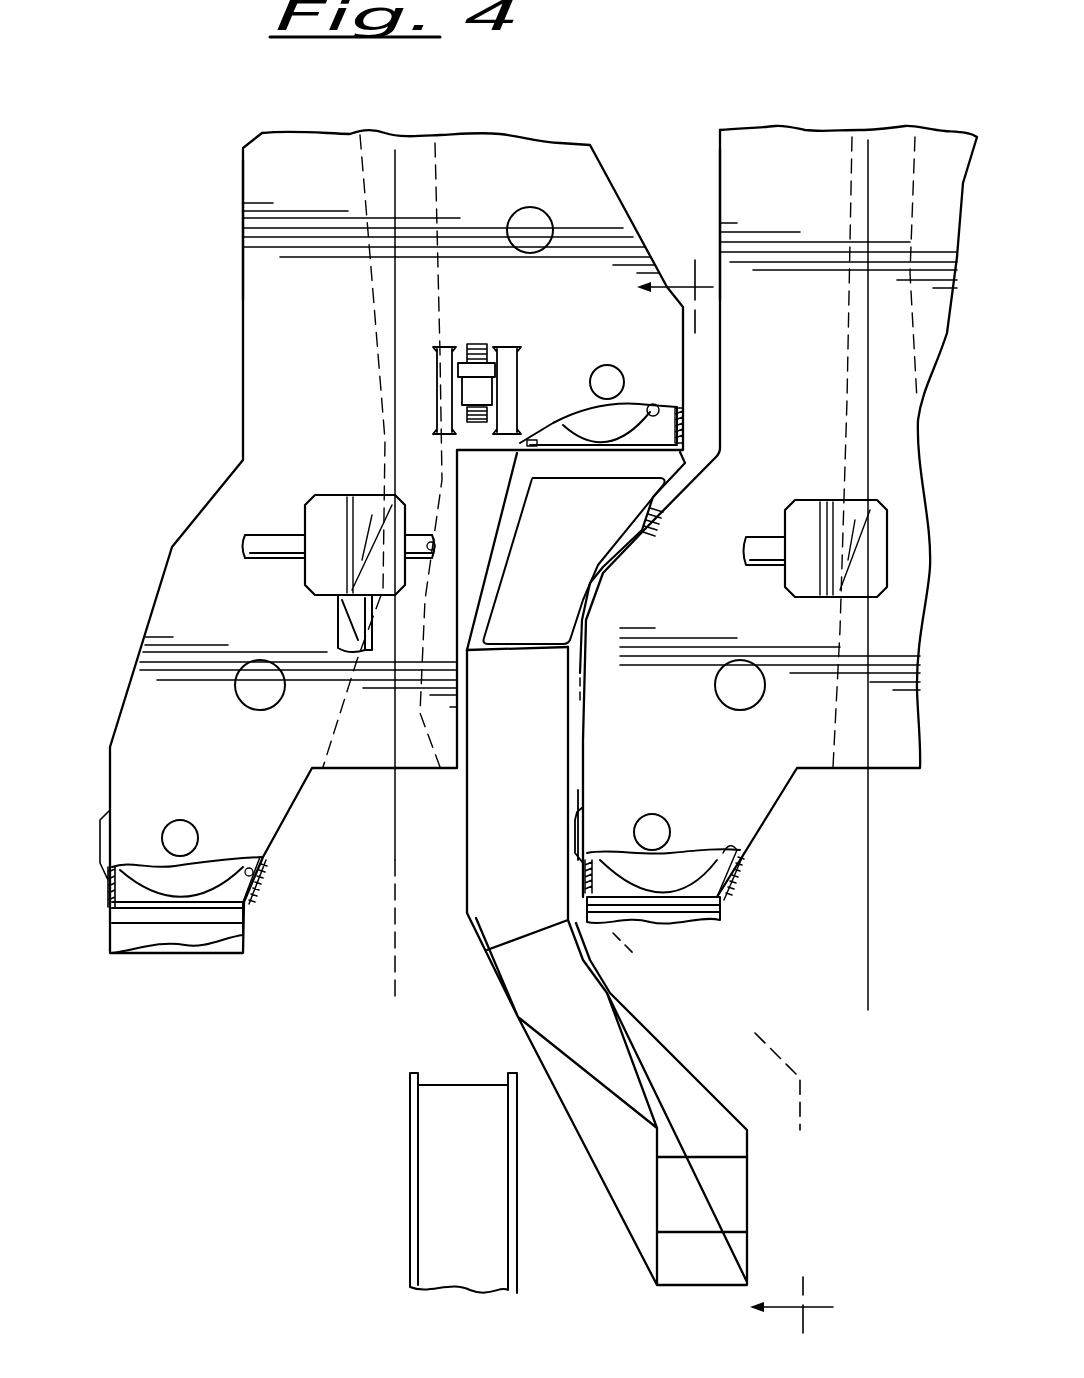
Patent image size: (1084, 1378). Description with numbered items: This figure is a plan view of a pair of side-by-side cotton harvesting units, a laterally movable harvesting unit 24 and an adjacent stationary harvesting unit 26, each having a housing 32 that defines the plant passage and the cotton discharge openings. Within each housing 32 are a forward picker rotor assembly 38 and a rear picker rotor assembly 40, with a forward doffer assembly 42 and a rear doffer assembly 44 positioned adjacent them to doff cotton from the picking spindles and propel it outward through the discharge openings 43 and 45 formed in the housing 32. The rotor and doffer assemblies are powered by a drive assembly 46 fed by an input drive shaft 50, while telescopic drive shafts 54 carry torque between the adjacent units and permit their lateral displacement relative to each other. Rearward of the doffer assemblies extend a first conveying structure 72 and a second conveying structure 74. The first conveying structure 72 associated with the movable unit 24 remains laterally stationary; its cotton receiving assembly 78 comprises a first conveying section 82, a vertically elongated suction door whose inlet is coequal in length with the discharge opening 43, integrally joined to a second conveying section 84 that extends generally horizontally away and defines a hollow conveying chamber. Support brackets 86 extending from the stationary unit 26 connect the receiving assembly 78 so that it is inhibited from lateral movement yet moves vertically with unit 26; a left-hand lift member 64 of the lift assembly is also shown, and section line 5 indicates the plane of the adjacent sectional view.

The section line 5- 5 is at (735, 785).
The harvesting unit 24 is at (418, 130).
The harvesting unit 26 is at (860, 122).
The housing 32 is at (255, 178).
The forward picker rotor assembly 38 is at (528, 233).
The rear picker rotor assembly 40 is at (262, 697).
The forward doffer assembly 42 is at (605, 370).
The discharge opening 43 is at (660, 413).
The rear doffer assembly 44 is at (183, 828).
The discharge opening 45 is at (263, 868).
The drive assembly 46 is at (338, 485).
The input drive shaft 50 is at (347, 620).
The telescopic drive shaft 54 is at (280, 537).
The left-hand lift member 64 is at (423, 1165).
The first conveying structure 72 is at (670, 1034).
The second conveying structure 74 is at (258, 930).
The cotton receiving assembly 78 is at (544, 701).
The first conveying section 82 is at (550, 543).
The second conveying section 84 is at (501, 818).
The support bracket 86 is at (655, 528).